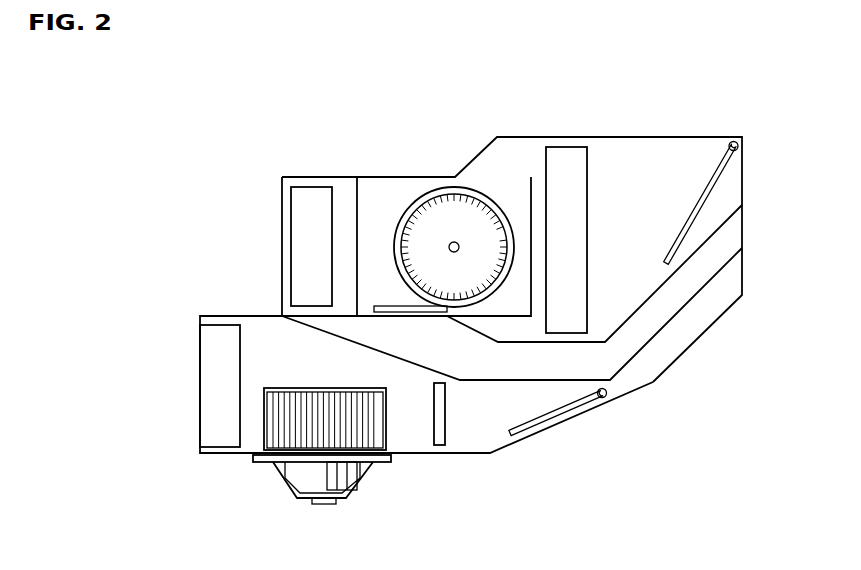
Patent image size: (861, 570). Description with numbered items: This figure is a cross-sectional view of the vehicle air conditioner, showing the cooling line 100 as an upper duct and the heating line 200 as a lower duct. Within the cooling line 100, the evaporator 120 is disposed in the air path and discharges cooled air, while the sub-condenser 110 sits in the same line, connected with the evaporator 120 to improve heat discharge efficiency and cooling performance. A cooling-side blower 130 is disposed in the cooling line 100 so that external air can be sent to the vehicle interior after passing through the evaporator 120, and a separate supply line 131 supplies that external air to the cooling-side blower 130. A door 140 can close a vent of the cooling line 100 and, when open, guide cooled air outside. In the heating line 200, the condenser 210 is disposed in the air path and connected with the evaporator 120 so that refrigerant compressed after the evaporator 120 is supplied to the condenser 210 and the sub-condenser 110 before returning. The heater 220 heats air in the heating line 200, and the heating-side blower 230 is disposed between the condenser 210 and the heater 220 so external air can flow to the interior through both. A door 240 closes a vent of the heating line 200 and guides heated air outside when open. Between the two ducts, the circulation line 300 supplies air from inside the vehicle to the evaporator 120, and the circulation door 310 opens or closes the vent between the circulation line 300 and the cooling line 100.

The cooling line 100 is at (647, 195).
The sub-condenser 110 is at (310, 198).
The evaporator 120 is at (563, 177).
The cooling-side blower 130 is at (450, 228).
The supply line 131 is at (394, 197).
The door 140 is at (718, 177).
The heating line 200 is at (273, 368).
The condenser 210 is at (227, 410).
The heater 220 is at (440, 427).
The heating-side blower 230 is at (316, 427).
The door 240 is at (555, 415).
The circulation line 300 is at (565, 372).
The circulation door 310 is at (405, 309).